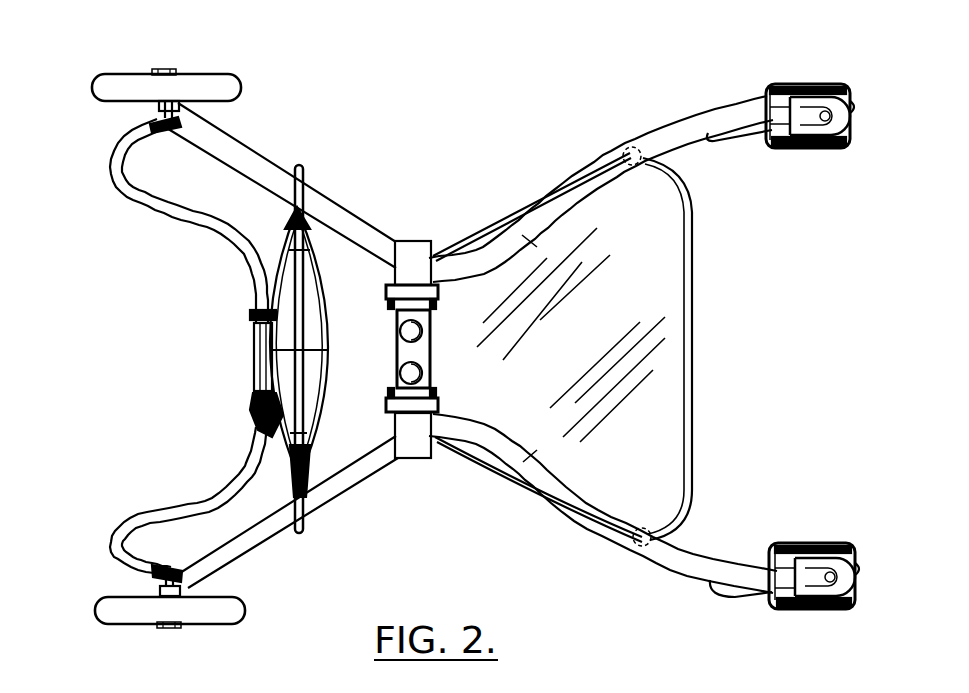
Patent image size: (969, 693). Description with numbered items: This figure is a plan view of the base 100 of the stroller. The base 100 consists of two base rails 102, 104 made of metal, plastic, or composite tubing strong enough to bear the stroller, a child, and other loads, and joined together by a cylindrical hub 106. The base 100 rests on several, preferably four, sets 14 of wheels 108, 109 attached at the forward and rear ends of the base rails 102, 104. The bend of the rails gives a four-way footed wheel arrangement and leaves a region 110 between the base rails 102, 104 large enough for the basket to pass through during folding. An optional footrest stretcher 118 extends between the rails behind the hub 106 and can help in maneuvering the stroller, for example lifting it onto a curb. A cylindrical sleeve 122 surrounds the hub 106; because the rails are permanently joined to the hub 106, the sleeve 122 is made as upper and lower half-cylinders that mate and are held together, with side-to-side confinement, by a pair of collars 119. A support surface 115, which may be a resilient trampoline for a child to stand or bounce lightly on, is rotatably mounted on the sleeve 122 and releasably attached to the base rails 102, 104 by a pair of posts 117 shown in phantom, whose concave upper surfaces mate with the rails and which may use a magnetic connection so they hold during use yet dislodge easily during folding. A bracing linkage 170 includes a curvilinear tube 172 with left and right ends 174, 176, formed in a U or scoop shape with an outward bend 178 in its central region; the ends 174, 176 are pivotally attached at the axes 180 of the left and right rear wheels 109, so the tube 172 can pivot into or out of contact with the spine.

The sets of wheels 14 is at (276, 73).
The base 100 is at (558, 108).
The base rail 102 is at (603, 508).
The base rail 104 is at (345, 207).
The cylindrical hub 106 is at (418, 252).
The wheel 108 is at (743, 136).
The wheel 109 is at (193, 86).
The region 110 is at (770, 377).
The support surface 115 is at (655, 300).
The posts 117 is at (645, 160).
The footrest stretcher 118 is at (303, 377).
The collars 119 is at (384, 291).
The cylindrical sleeve 122 is at (326, 512).
The bracing linkage 170 is at (143, 370).
The curvilinear tube 172 is at (215, 232).
The left end 174 is at (127, 143).
The right end 176 is at (123, 561).
The outward bend 178 is at (243, 468).
The axes 180 is at (160, 72).